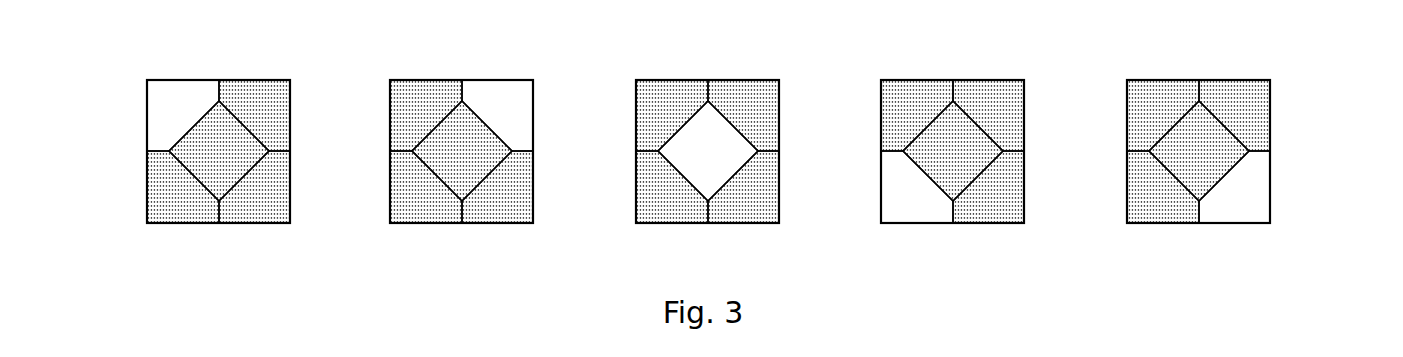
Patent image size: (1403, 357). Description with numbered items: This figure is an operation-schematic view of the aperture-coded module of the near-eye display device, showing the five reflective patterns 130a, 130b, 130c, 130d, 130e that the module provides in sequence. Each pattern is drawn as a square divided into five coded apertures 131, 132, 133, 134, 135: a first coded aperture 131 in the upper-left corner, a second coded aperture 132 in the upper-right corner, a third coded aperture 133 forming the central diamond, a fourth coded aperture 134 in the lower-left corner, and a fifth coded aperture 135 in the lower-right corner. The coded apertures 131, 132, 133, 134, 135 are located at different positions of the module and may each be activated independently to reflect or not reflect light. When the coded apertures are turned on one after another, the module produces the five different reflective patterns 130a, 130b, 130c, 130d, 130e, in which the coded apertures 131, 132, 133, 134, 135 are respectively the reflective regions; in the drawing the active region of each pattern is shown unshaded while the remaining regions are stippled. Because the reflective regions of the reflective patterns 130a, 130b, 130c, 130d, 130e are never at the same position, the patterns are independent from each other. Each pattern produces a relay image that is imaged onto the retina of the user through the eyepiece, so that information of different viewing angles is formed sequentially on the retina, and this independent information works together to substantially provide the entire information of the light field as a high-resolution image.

The reflective pattern 130a is at (162, 54).
The reflective pattern 130b is at (405, 54).
The reflective pattern 130c is at (651, 54).
The reflective pattern 130d is at (896, 54).
The reflective pattern 130e is at (1142, 54).
The coded aperture 131 is at (155, 92).
The coded aperture 132 is at (290, 122).
The coded aperture 133 is at (236, 176).
The coded aperture 134 is at (155, 167).
The coded aperture 135 is at (290, 197).